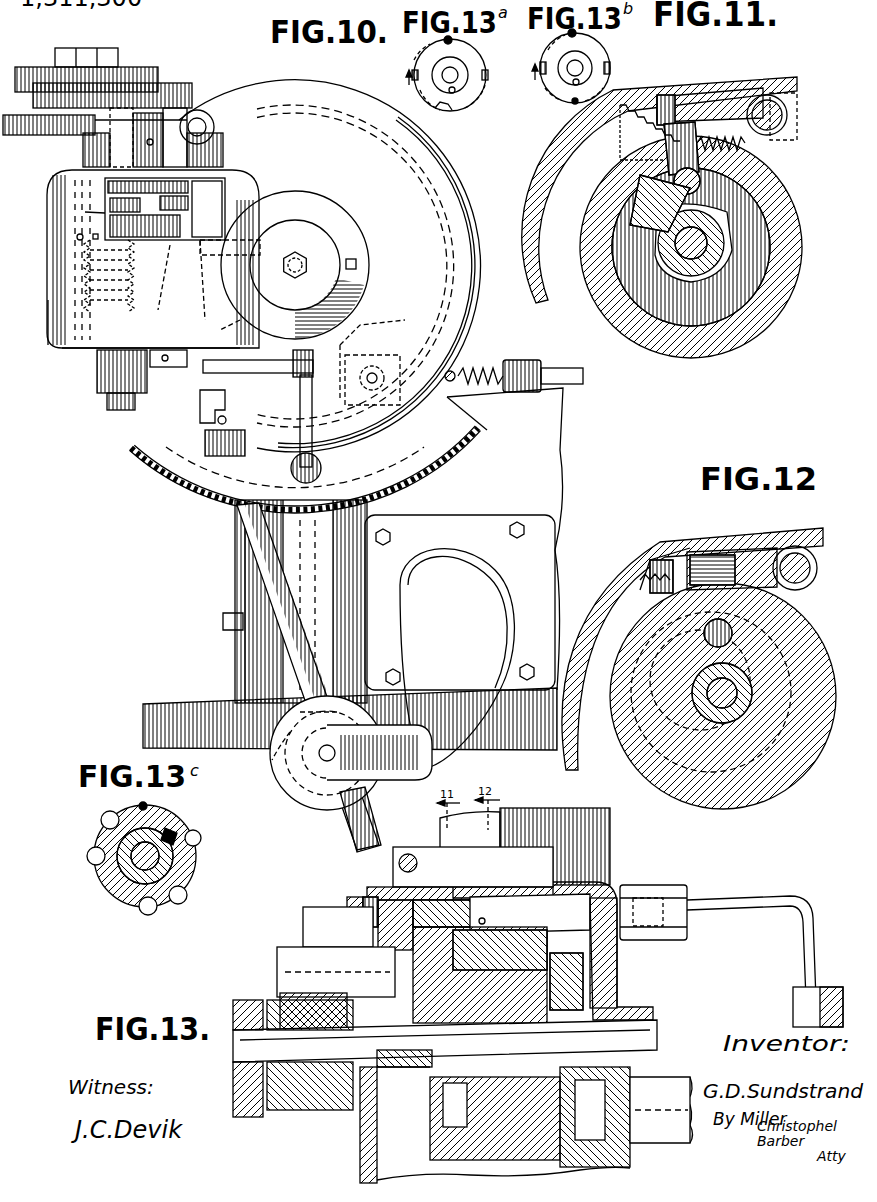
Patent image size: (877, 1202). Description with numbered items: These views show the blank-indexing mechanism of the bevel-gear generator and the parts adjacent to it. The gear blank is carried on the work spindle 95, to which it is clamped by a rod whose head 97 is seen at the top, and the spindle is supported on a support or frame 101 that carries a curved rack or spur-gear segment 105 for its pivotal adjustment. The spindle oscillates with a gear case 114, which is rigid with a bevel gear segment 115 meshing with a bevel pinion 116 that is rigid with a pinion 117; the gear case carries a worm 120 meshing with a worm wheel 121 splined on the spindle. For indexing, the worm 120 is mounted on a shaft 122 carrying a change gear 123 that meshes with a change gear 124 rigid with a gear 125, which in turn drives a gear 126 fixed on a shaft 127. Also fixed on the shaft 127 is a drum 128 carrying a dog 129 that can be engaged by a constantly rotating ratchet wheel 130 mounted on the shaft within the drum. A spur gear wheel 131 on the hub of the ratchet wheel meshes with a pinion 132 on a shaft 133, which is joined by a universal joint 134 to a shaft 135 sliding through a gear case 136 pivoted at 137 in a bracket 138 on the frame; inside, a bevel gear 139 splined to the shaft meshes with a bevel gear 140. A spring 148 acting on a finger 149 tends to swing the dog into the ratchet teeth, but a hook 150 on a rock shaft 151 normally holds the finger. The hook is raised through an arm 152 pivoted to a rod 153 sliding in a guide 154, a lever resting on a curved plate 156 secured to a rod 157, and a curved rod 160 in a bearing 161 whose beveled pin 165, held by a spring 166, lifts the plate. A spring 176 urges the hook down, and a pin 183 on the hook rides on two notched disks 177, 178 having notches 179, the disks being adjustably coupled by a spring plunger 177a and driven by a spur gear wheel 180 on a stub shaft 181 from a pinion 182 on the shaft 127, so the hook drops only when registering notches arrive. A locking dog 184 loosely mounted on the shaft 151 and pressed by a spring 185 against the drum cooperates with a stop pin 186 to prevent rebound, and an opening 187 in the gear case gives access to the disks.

In FIG. 10, the work spindle 95 is at (320, 250).
In FIG. 10, the head 97 is at (298, 260).
In FIG. 10, the support or frame 101 is at (556, 484).
In FIG. 10, the curved rack or spur-gear segment 105 is at (507, 760).
In FIG. 10, the gear case 114 is at (436, 114).
In FIG. 10, the bevel gear segment 115 is at (163, 462).
In FIG. 10, the bevel pinion 116 is at (378, 476).
In FIG. 10, the pinion 117 is at (270, 760).
In FIG. 10, the worm 120 is at (58, 318).
In FIG. 10, the worm wheel 121 is at (455, 216).
In FIG. 10, the shaft 122 is at (73, 350).
In FIG. 10, the change gear 123 is at (158, 72).
In FIG. 10, the change gear 124 is at (22, 72).
In FIG. 10, the gear 125 is at (34, 100).
In FIG. 10, the gear 126 is at (176, 110).
In FIG. 13, the gear 126 is at (235, 1015).
In FIG. 11, the shaft 127 is at (689, 282).
In FIG. 12, the shaft 127 is at (700, 726).
In FIG. 13, the shaft 127 is at (233, 1056).
In FIG. 11, the drum 128 is at (618, 311).
In FIG. 12, the drum 128 is at (767, 800).
In FIG. 13, the drum 128 is at (433, 1154).
In FIG. 11, the dog 129 is at (603, 207).
In FIG. 12, the dog 129 is at (637, 642).
In FIG. 11, the ratchet wheel 130 is at (660, 262).
In FIG. 13, the ratchet wheel 130 is at (440, 1098).
In FIG. 13, the spur gear wheel 131 is at (600, 985).
In FIG. 13, the pinion 132 is at (580, 1147).
In FIG. 10, the shaft 133 is at (212, 398).
In FIG. 13, the shaft 133 is at (690, 1075).
In FIG. 10, the universal joint 134 is at (218, 428).
In FIG. 10, the shaft 135 is at (258, 562).
In FIG. 10, the gear case 136 is at (300, 798).
In FIG. 10, the pivot 137 is at (316, 764).
In FIG. 10, the bracket 138 is at (460, 641).
In FIG. 10, the bevel gear 139 is at (305, 815).
In FIG. 10, the bevel gear 140 is at (290, 751).
In FIG. 11, the spring 148 is at (732, 100).
In FIG. 11, the finger 149 is at (705, 100).
In FIG. 13, the finger 149 is at (580, 893).
In FIG. 10, the hook 150 is at (165, 209).
In FIG. 11, the hook 150 is at (666, 96).
In FIG. 12, the hook 150 is at (683, 557).
In FIG. 13, the hook 150 is at (418, 905).
In FIG. 11, the rock shaft 151 is at (768, 95).
In FIG. 12, the rock shaft 151 is at (800, 590).
In FIG. 13, the rock shaft 151 is at (612, 880).
In FIG. 10, the arm 152 is at (266, 374).
In FIG. 11, the arm 152 is at (790, 141).
In FIG. 13, the arm 152 is at (676, 885).
In FIG. 10, the rod 153 is at (312, 432).
In FIG. 13, the rod 153 is at (804, 955).
In FIG. 10, the guide 154 is at (291, 468).
In FIG. 13, the guide 154 is at (793, 1008).
In FIG. 10, the plate 156 is at (395, 318).
In FIG. 10, the rod 157 is at (376, 360).
In FIG. 10, the rod 160 is at (580, 384).
In FIG. 10, the bearing 161 is at (533, 360).
In FIG. 10, the beveled pin 165 is at (466, 371).
In FIG. 10, the spring 166 is at (493, 370).
In FIG. 10, the spring 176 is at (160, 245).
In FIG. 11, the spring 176 is at (684, 95).
In FIG. 13C, the notched plate 177 is at (196, 877).
In FIG. 13, the notched plate 177 is at (320, 960).
In FIG. 13C, the spring plunger 177a is at (180, 838).
In FIG. 13A, the notched plate 178 is at (472, 60).
In FIG. 11, the notched plate 178 is at (626, 143).
In FIG. 13, the notched plate 178 is at (360, 965).
In FIG. 13A, the notches 179 is at (468, 105).
In FIG. 13C, the notches 179 is at (102, 820).
In FIG. 13C, the spur gear wheel 180 is at (115, 866).
In FIG. 13, the spur gear wheel 180 is at (372, 897).
In FIG. 13C, the stub shaft 181 is at (131, 893).
In FIG. 13, the stub shaft 181 is at (282, 970).
In FIG. 13, the pinion 182 is at (404, 1076).
In FIG. 13A, the pin 183 is at (444, 38).
In FIG. 13B, the pin 183 is at (578, 31).
In FIG. 13C, the pin 183 is at (149, 804).
In FIG. 13, the pin 183 is at (399, 866).
In FIG. 10, the locking dog 184 is at (209, 285).
In FIG. 12, the locking dog 184 is at (760, 548).
In FIG. 13, the locking dog 184 is at (473, 907).
In FIG. 12, the spring 185 is at (722, 586).
In FIG. 12, the stop pin 186 is at (662, 577).
In FIG. 10, the opening 187 is at (85, 212).
In FIG. 13, the opening 187 is at (348, 897).